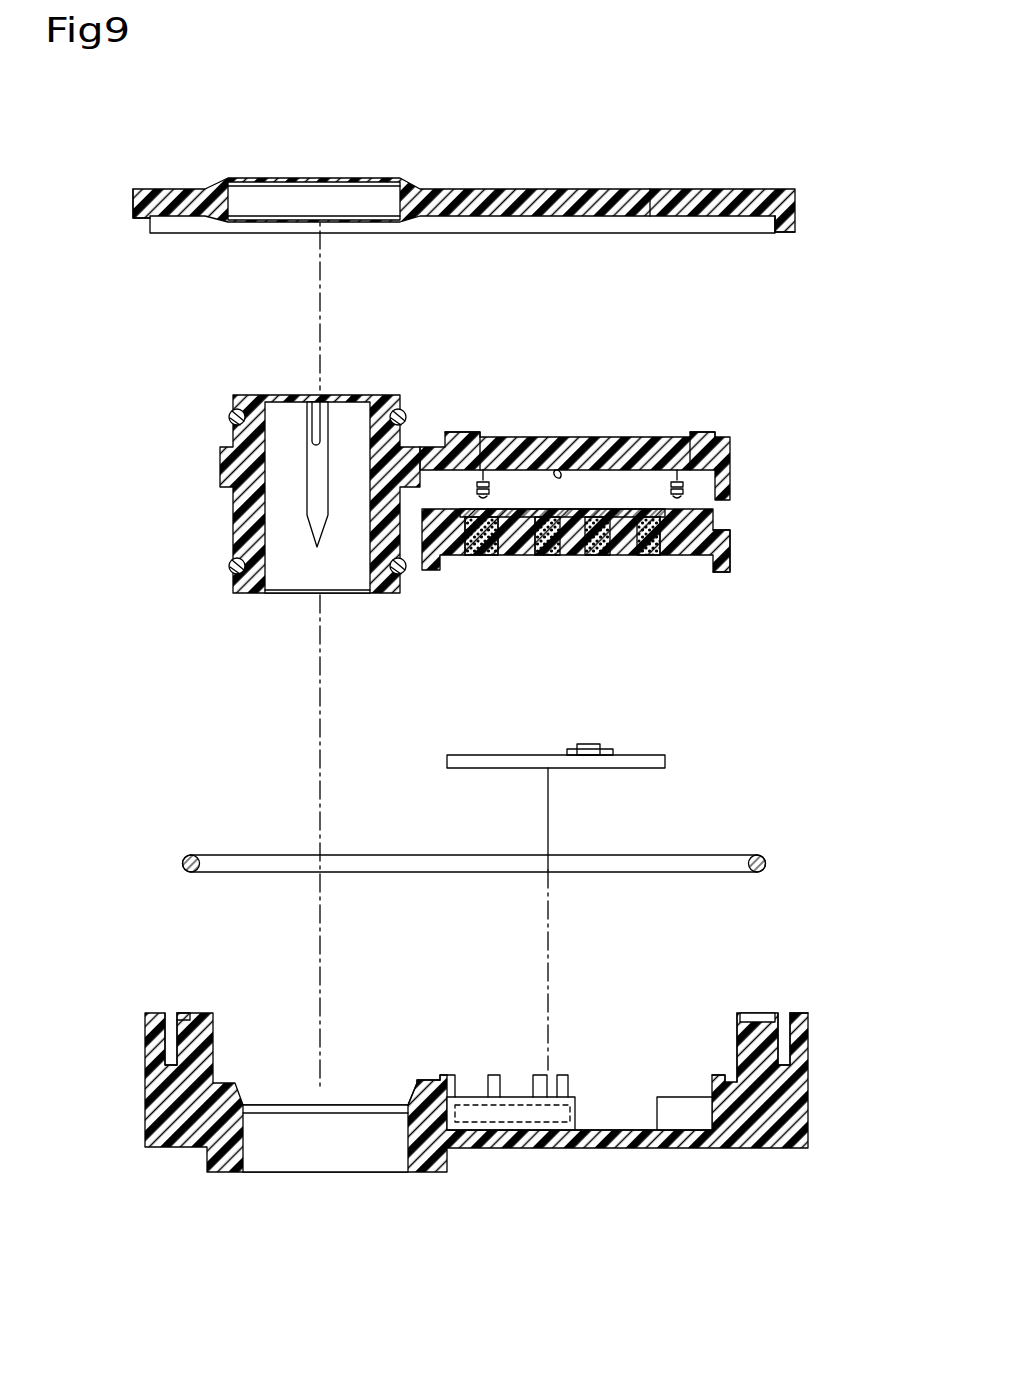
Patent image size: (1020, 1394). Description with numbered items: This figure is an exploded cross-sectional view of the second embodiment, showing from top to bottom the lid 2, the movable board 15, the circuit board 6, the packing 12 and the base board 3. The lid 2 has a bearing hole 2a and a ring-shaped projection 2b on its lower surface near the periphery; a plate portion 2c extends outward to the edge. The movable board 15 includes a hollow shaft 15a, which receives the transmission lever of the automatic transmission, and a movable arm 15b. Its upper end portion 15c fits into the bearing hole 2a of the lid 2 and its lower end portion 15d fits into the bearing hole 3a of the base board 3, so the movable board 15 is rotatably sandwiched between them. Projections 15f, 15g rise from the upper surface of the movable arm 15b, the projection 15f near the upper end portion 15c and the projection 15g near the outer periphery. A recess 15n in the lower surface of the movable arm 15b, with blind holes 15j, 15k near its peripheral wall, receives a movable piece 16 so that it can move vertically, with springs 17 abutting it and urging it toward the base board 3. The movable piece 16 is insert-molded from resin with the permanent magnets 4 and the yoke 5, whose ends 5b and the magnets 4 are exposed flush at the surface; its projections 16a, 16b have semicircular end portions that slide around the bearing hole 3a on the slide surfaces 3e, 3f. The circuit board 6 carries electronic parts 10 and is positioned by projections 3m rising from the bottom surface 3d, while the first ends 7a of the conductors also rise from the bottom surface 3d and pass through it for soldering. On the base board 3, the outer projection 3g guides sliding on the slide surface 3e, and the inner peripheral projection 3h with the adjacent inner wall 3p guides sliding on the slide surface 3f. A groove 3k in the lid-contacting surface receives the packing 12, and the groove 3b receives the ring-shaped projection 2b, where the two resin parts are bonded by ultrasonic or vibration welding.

The lid 2 is at (520, 165).
The bearing hole 2a is at (400, 185).
The ring-shaped projection 2b is at (150, 233).
The upper case plate portion 2c is at (655, 216).
The base board 3 is at (828, 1063).
The bearing hole 3a is at (255, 1175).
The groove 3b is at (165, 1012).
The bottom surface 3d is at (640, 1130).
The slide surface 3e is at (430, 1082).
The slide surface 3f is at (727, 1078).
The outer projection 3g is at (449, 1075).
The inner peripheral projection 3h is at (712, 1078).
The groove 3k is at (195, 1015).
The projection 3m is at (574, 1080).
The inner wall 3p is at (736, 1012).
The permanent magnet 4 is at (598, 555).
The yoke 5 is at (517, 555).
The substrate end portions 5b is at (480, 555).
The circuit board 6 is at (668, 758).
The first ends 7a is at (540, 1075).
The electronic parts 10 is at (598, 745).
The packing 12 is at (243, 855).
The movable board 15 is at (481, 482).
The hollow shaft 15a is at (222, 462).
The movable arm 15b is at (595, 440).
The upper end portion 15c is at (233, 405).
The lower end portion 15d is at (238, 593).
The projection 15f is at (465, 432).
The projection 15g is at (712, 435).
The blind hole 15j is at (672, 440).
The blind hole 15k is at (487, 440).
The recess 15n is at (555, 440).
The movable piece 16 is at (612, 490).
The projection 16a is at (432, 572).
The projection 16b is at (720, 570).
The spring 17 is at (497, 445).